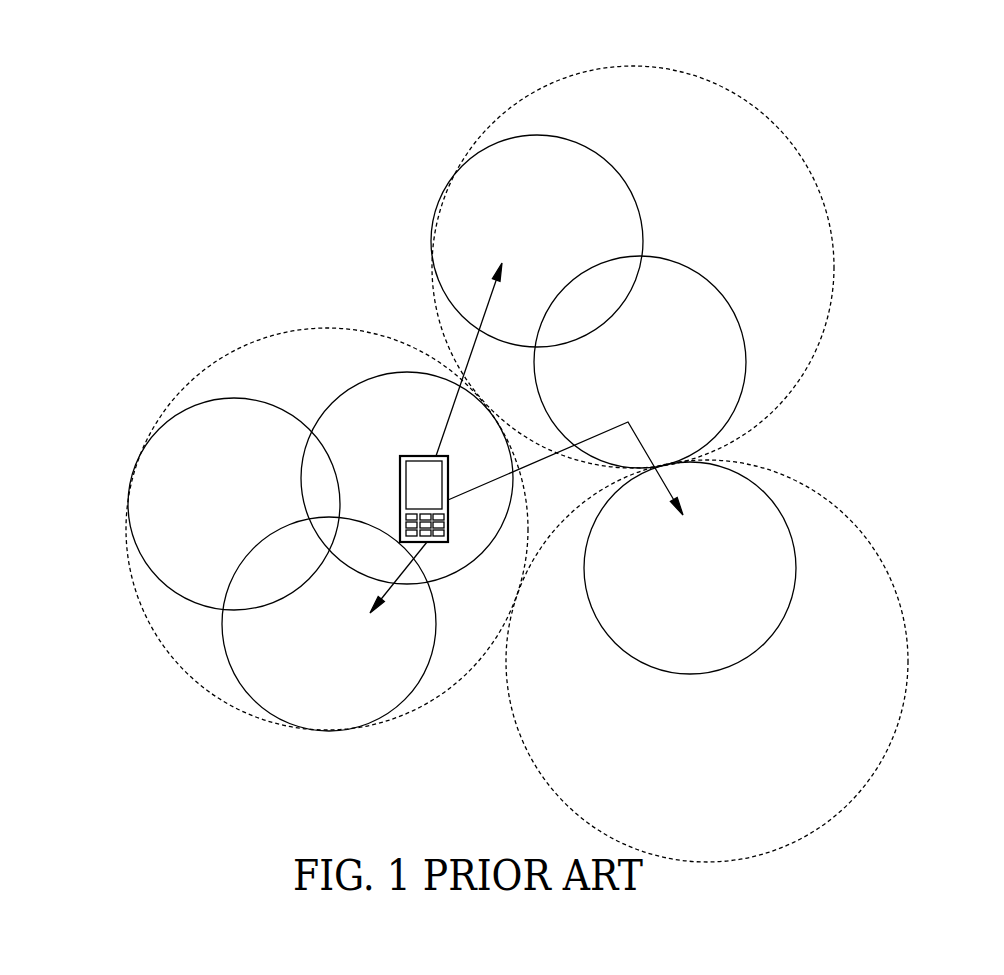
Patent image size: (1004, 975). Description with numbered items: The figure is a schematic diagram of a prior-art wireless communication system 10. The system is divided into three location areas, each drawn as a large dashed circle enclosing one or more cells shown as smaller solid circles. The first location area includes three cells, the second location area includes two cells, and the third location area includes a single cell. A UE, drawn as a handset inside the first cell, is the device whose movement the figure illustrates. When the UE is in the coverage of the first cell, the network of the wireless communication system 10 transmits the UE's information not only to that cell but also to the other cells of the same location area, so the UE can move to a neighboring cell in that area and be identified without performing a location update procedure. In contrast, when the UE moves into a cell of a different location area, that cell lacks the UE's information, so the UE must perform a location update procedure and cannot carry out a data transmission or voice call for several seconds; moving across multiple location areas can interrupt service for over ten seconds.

The wireless communication system 10 is at (907, 122).